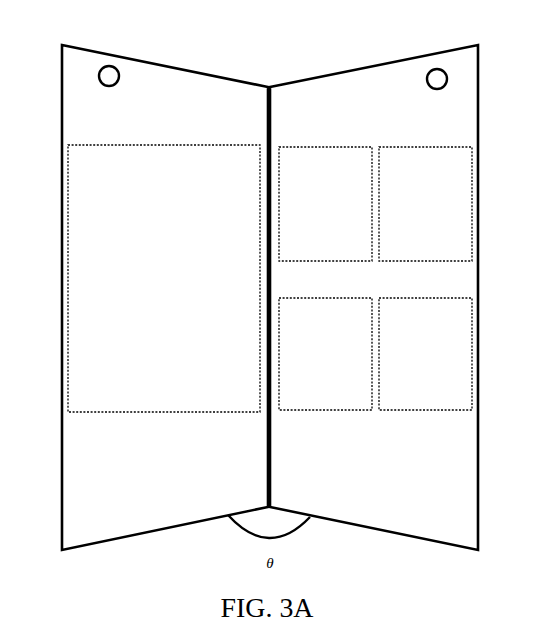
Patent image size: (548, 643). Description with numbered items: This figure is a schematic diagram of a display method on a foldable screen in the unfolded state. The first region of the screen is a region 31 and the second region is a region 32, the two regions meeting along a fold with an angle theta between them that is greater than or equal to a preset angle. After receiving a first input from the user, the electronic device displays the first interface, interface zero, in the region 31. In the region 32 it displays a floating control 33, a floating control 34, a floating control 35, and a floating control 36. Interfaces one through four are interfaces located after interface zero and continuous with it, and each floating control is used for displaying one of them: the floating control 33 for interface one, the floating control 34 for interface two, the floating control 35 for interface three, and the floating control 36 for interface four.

The region 31 is at (167, 87).
The region 32 is at (378, 85).
The floating control 33 is at (325, 145).
The floating control 34 is at (424, 145).
The floating control 35 is at (327, 410).
The floating control 36 is at (432, 410).